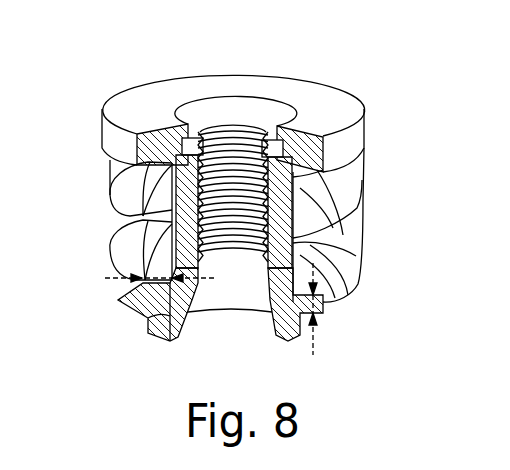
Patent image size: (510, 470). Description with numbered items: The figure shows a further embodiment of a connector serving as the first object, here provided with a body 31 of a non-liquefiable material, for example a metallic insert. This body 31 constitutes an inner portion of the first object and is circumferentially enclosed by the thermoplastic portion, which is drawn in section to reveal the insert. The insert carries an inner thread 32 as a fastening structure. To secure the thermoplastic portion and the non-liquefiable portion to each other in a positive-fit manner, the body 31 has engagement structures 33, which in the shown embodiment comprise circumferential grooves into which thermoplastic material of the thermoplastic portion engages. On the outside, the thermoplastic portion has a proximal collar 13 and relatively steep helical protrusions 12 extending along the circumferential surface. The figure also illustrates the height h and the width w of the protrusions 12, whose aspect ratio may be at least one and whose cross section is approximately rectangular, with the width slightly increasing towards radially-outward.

The helical protrusions 12 is at (128, 222).
The proximal collar 13 is at (305, 157).
The body of non-liquefiable material 31 is at (215, 118).
The inner thread 32 is at (231, 232).
The engagement structures 33 is at (300, 270).